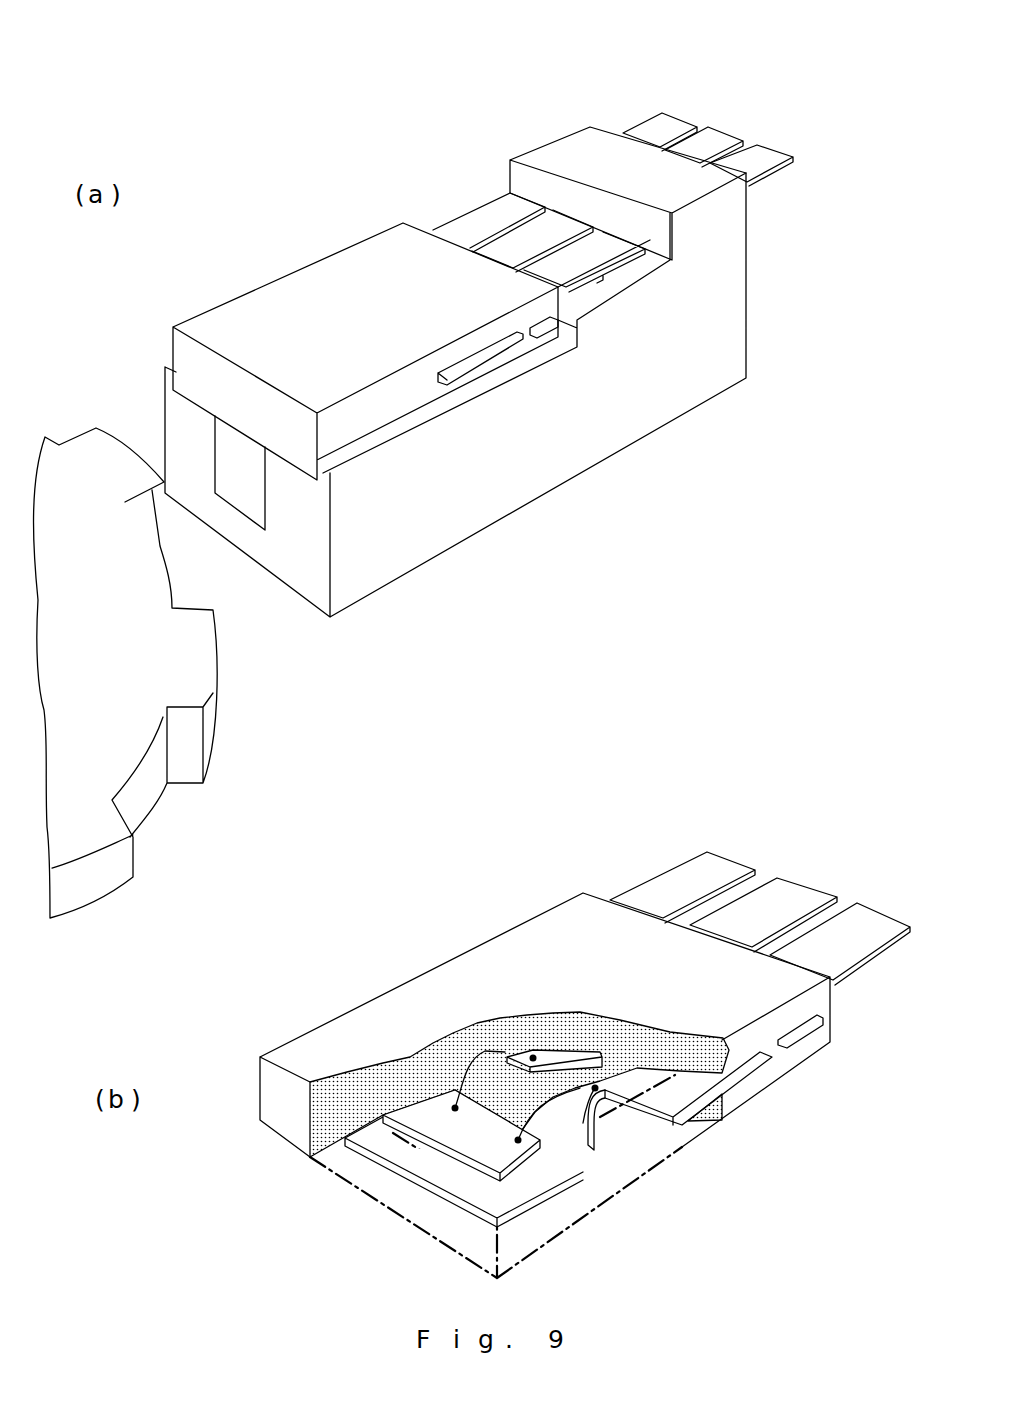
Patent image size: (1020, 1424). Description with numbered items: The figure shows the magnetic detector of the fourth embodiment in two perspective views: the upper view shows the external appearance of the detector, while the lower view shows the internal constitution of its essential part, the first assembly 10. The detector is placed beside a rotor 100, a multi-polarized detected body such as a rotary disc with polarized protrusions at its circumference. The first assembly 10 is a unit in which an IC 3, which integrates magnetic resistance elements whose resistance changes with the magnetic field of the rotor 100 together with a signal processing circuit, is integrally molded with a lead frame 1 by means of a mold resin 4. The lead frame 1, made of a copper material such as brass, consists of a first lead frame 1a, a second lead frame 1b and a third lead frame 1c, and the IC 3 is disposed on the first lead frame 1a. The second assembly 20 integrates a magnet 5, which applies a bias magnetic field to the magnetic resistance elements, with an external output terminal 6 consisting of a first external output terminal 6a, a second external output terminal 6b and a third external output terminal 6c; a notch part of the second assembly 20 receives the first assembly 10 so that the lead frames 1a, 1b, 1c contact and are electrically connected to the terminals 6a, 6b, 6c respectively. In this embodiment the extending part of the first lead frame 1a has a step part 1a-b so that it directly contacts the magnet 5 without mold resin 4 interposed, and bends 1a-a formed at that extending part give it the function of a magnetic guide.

The lead frame 1 is at (549, 40).
The first lead frame 1a is at (613, 243).
The second lead frame 1b is at (567, 223).
The third lead frame 1c is at (493, 212).
The bends 1a-a is at (500, 1208).
The step part 1a-b is at (400, 1152).
The IC 3 is at (440, 1080).
The mold resin 4 is at (690, 1047).
The magnet 5 is at (242, 492).
The external output terminal 6 is at (703, 28).
The first external output terminal 6a is at (780, 155).
The second external output terminal 6b is at (723, 140).
The third external output terminal 6c is at (667, 125).
The first assembly 10 is at (327, 273).
The second assembly 20 is at (533, 583).
The rotor 100 is at (140, 803).